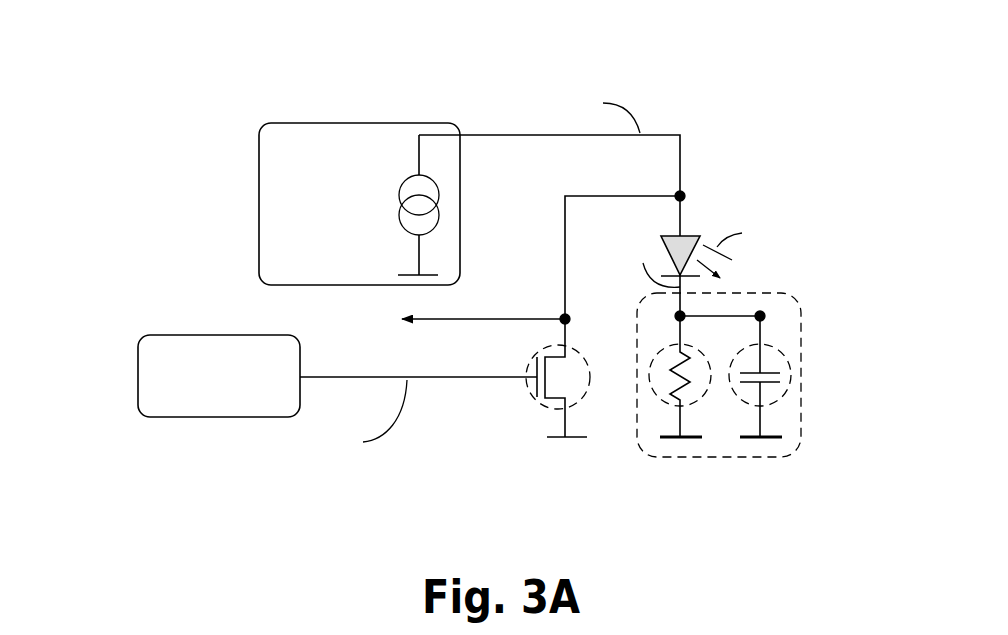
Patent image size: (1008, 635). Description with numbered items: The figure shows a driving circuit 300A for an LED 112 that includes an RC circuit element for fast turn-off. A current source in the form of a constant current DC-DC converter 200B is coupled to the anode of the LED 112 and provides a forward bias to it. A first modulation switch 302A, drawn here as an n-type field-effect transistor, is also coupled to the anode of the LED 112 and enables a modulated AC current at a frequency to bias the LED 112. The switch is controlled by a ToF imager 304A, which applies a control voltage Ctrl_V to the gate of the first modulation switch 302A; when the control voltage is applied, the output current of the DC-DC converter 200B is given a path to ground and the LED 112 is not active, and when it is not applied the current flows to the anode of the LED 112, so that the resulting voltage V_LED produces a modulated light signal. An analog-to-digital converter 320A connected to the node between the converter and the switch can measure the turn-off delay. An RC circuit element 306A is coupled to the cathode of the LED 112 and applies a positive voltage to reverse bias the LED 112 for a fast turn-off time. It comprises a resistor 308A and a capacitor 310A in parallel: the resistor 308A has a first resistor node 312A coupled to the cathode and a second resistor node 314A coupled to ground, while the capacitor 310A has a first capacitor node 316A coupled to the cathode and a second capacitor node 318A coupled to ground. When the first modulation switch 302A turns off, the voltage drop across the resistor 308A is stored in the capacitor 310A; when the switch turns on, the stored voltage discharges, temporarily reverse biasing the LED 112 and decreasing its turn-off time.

The driving circuit 300A is at (143, 37).
The constant current DC-DC converter 200B is at (315, 123).
The ToF imager 304A is at (185, 335).
The LED 112 is at (702, 232).
The first resistor node 312A is at (677, 311).
The first capacitor node 316A is at (764, 311).
The RC circuit element 306A is at (802, 353).
The analog-to-digital converter 320A is at (376, 336).
The first modulation switch 302A is at (529, 398).
The resistor 308A is at (664, 406).
The capacitor 310A is at (778, 406).
The second resistor node 314A is at (682, 441).
The second capacitor node 318A is at (760, 441).